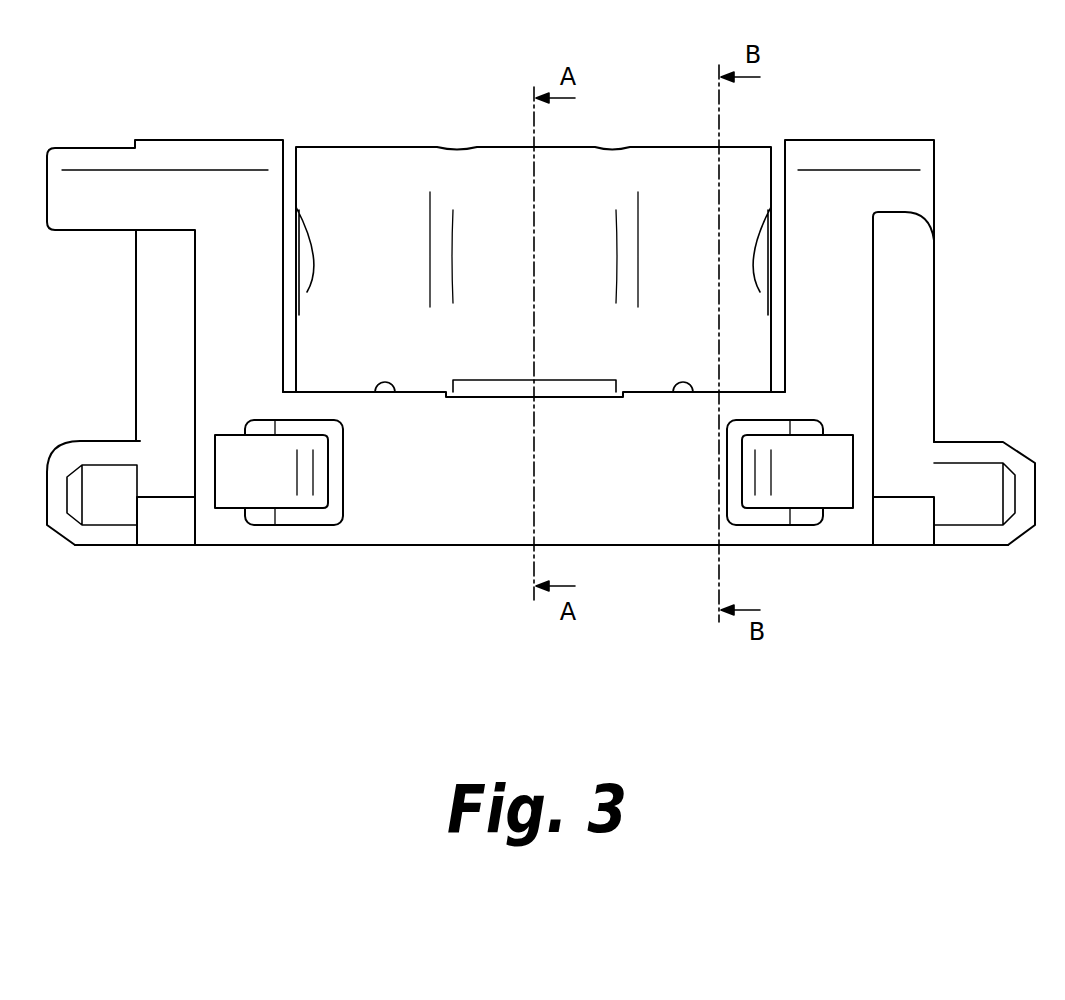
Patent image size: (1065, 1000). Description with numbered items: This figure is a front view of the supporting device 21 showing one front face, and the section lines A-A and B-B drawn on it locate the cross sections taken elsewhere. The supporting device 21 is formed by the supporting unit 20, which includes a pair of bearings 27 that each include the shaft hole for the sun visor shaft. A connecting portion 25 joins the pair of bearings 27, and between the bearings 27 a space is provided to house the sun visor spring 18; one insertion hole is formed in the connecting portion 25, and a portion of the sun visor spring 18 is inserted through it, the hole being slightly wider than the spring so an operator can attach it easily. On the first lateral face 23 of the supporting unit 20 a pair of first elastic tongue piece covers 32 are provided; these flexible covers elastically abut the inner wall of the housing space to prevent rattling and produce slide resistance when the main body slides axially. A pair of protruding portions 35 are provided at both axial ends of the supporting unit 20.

The sun visor spring 18 is at (491, 195).
The supporting unit 20 is at (541, 370).
The supporting device 21 is at (608, 650).
The first lateral face 23 is at (393, 517).
The connecting portion 25 is at (670, 520).
The bearings 27 is at (242, 232).
The first elastic tongue piece covers 32 is at (262, 490).
The protruding portions 35 is at (95, 535).